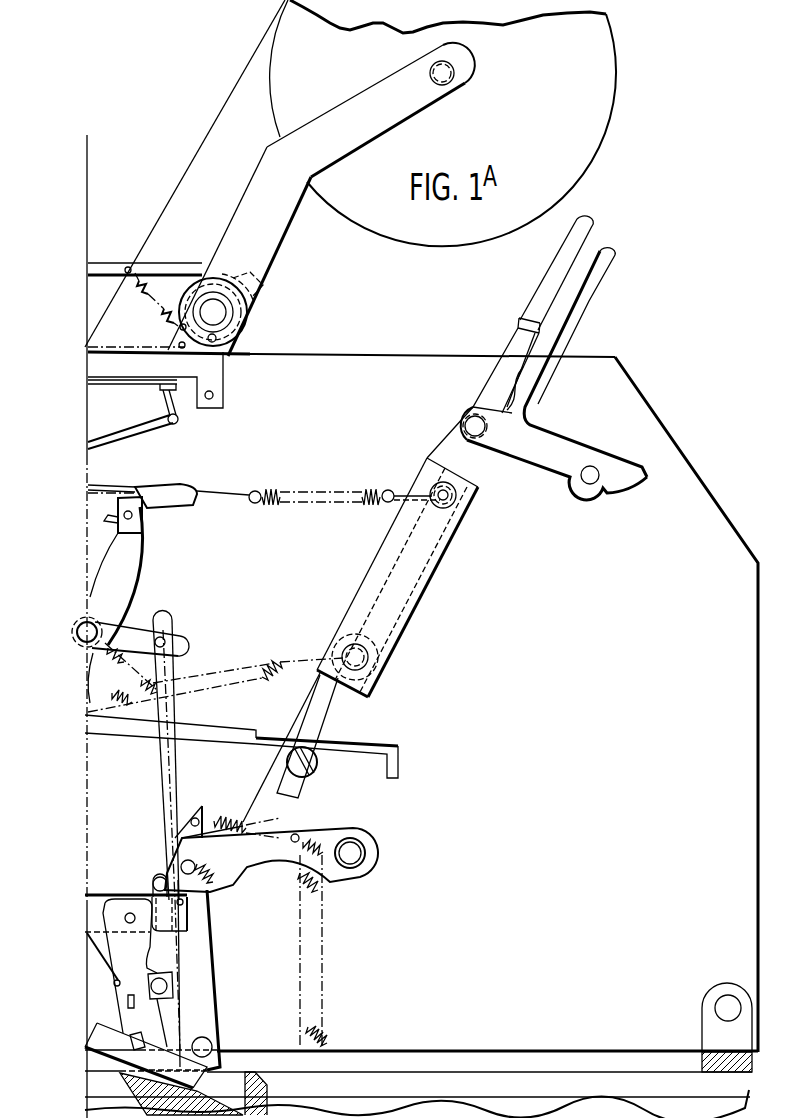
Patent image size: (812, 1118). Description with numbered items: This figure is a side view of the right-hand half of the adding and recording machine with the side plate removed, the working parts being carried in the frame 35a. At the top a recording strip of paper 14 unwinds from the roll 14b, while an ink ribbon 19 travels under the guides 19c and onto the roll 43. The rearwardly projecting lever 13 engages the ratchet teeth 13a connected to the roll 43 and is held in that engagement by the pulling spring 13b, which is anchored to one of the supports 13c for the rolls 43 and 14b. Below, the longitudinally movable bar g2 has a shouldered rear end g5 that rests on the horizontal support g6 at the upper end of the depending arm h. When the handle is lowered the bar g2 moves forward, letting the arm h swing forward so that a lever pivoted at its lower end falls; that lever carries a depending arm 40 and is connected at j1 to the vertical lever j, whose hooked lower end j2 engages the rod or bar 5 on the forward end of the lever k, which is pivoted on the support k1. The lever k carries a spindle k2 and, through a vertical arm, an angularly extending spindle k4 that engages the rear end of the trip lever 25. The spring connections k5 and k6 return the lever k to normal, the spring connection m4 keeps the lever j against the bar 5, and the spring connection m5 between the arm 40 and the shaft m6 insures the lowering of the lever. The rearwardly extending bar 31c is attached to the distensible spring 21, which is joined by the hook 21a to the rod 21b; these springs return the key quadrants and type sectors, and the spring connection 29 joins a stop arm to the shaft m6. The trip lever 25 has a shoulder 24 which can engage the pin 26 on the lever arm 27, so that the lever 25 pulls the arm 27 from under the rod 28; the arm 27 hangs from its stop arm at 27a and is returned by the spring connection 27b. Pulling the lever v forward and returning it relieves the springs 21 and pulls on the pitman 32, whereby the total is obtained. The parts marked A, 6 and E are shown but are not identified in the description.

The frame A is at (421, 626).
The recording strip of paper 14 is at (200, 152).
The roll 14b is at (443, 123).
The rearwardly-projecting lever 13 is at (157, 266).
The ratchet teeth 13a is at (258, 291).
The pulling spring 13b is at (135, 270).
The supports 13c is at (222, 338).
The ink ribbon 19 is at (117, 347).
The guides 19c is at (183, 347).
The roll 43 is at (248, 316).
The link 6 is at (98, 440).
The lever v is at (547, 290).
The lever E is at (338, 720).
The shaft m6 is at (370, 657).
The spring 21 is at (311, 490).
The hook 21a is at (401, 487).
The rod 21b is at (455, 500).
The rearwardly-extending bar 31c is at (228, 487).
The longitudinally-movable bar g2 is at (102, 503).
The shoulder g5 is at (142, 518).
The horizontally extending support g6 is at (160, 485).
The depending arm h is at (130, 580).
The vertical lever j is at (157, 750).
The pivotal connection j1 is at (185, 638).
The hooked end j2 is at (160, 870).
The spring connection m4 is at (155, 682).
The spring connection m5 is at (303, 690).
The depending arm 40 is at (116, 689).
The pitman 32 is at (398, 765).
The frame 35a is at (657, 567).
The spring connection 29 is at (253, 803).
The lever k is at (256, 874).
The support k1 is at (372, 850).
The spindle k2 is at (212, 878).
The angularly-extending spindle k4 is at (212, 1047).
The spring connection k5 is at (250, 823).
The spring connection k6 is at (317, 890).
The rod or bar 5 is at (153, 880).
The lever arm 27 is at (152, 975).
The connection 27a is at (125, 917).
The spring connection 27b is at (97, 958).
The rod 28 is at (173, 988).
The pin 26 is at (135, 1005).
The shoulder 24 is at (102, 1024).
The trip lever 25 is at (107, 1043).